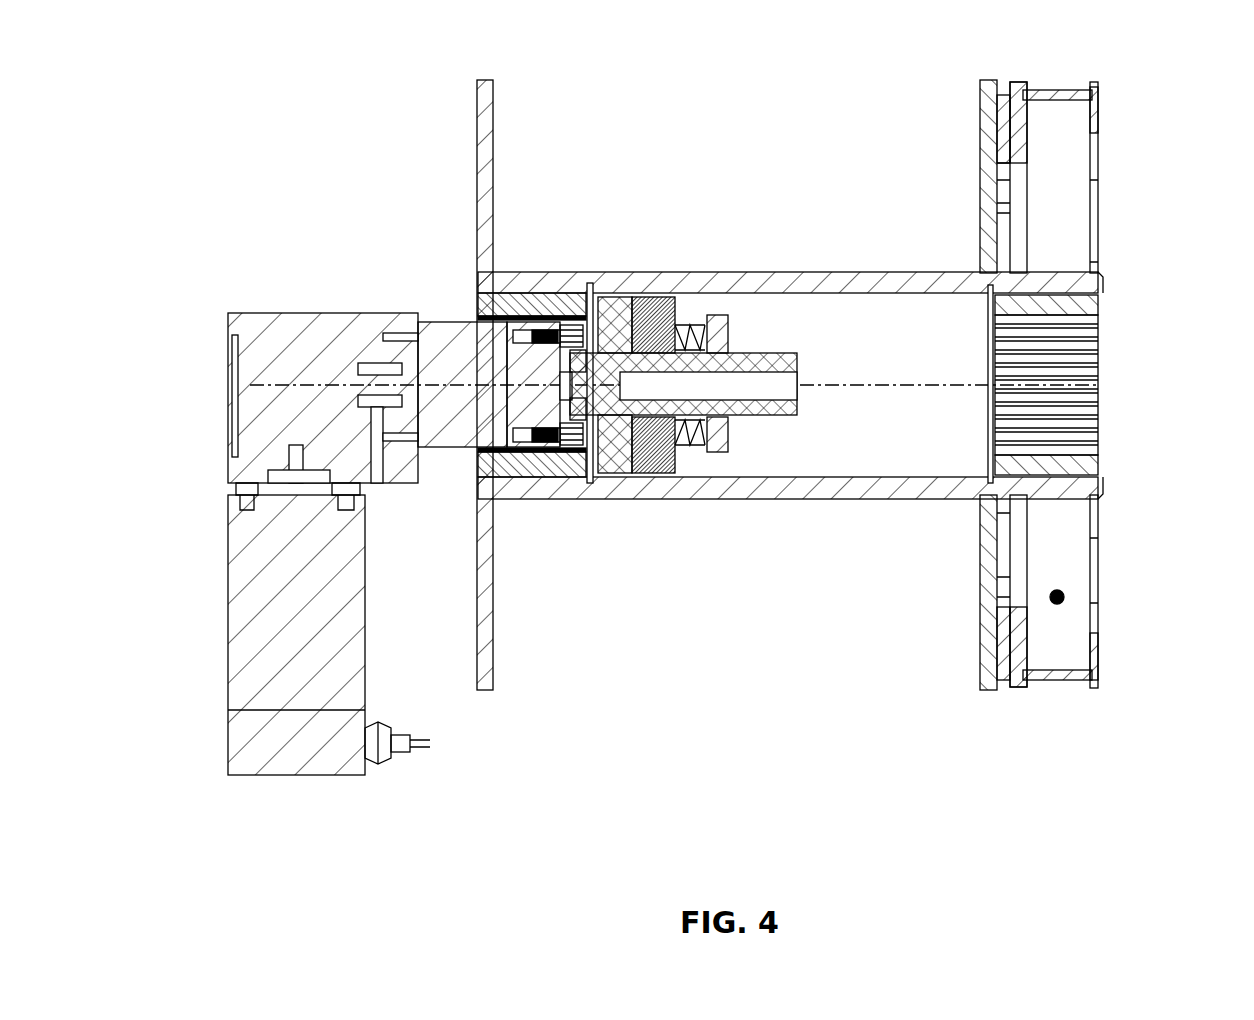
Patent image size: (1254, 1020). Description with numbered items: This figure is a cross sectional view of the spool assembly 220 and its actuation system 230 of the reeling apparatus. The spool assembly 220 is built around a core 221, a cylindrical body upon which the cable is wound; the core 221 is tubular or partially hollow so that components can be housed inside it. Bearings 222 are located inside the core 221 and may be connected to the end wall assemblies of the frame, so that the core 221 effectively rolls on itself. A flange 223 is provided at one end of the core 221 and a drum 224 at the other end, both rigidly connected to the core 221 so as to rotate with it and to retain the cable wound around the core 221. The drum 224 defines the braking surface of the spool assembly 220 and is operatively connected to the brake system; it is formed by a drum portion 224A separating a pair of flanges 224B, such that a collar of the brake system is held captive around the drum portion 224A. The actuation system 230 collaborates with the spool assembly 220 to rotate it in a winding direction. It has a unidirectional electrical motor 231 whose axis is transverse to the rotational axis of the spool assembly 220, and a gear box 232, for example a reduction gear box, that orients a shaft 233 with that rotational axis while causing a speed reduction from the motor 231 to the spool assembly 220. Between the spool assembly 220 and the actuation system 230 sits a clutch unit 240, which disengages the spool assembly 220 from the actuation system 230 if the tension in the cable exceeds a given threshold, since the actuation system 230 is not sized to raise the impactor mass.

The spool assembly 220 is at (780, 138).
The core 221 is at (815, 500).
The bearings 222 is at (477, 466).
The flange 223 is at (490, 690).
The drum 224 is at (1057, 597).
The drum portion 224A is at (1062, 680).
The flanges 224B is at (980, 633).
The actuation system 230 is at (297, 310).
The unidirectional electrical motor 231 is at (228, 632).
The gear box 232 is at (448, 318).
The shaft 233 is at (598, 393).
The clutch unit 240 is at (735, 350).